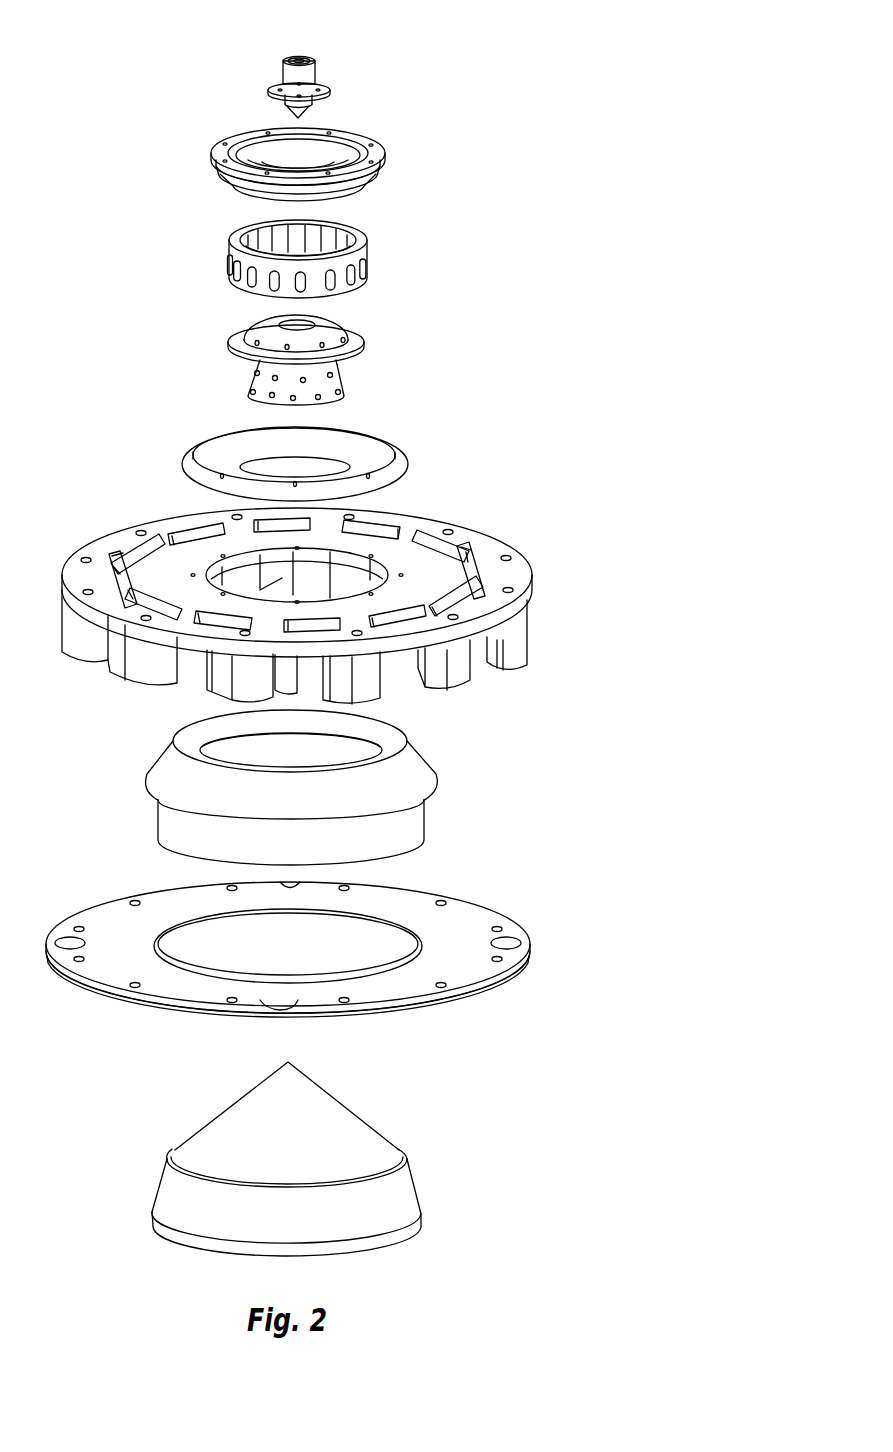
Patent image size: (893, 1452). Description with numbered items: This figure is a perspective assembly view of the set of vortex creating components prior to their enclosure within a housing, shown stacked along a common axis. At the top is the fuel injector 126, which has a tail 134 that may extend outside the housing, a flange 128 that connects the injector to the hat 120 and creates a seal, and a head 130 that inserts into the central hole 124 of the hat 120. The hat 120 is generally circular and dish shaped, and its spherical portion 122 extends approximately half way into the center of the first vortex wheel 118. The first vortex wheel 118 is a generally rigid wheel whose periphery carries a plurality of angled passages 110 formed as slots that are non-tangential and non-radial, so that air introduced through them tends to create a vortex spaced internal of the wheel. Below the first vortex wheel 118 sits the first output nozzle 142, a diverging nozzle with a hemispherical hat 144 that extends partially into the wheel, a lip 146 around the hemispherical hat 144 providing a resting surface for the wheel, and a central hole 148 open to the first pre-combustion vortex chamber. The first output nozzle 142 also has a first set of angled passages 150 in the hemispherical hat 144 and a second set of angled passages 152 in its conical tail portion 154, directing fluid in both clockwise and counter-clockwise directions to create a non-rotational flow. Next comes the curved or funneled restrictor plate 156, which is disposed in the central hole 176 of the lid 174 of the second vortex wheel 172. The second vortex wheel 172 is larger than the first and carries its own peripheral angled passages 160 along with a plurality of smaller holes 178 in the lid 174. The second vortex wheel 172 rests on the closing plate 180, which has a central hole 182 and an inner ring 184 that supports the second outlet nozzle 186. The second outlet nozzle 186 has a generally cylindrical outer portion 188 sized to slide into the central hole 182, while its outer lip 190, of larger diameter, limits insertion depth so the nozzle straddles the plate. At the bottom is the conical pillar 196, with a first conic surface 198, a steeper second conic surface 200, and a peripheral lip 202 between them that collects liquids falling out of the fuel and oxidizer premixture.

The angled passages 110 is at (368, 272).
The first vortex wheel 118 is at (353, 254).
The hat 120 is at (311, 152).
The spherical portion 122 is at (275, 196).
The central hole 124 is at (290, 160).
The fuel injector 126 is at (310, 66).
The flange 128 is at (330, 84).
The head 130 is at (322, 105).
The tail 134 is at (282, 72).
The first output nozzle 142 is at (302, 352).
The hemispherical hat 144 is at (241, 333).
The lip 146 is at (360, 336).
The central hole 148 is at (293, 323).
The first set of angled passages 150 is at (275, 357).
The second set of angled passages 152 is at (272, 398).
The conical tail portion 154 is at (309, 390).
The restrictor plate 156 is at (410, 472).
The angled passages 160 is at (490, 640).
The second vortex wheel 172 is at (327, 599).
The lid 174 is at (160, 555).
The central hole 176 is at (330, 575).
The smaller holes 178 is at (520, 562).
The closing plate 180 is at (333, 922).
The central hole 182 is at (340, 940).
The inner ring 184 is at (420, 950).
The second outlet nozzle 186 is at (301, 787).
The generally cylindrical outer portion 188 is at (155, 810).
The outer lip 190 is at (440, 777).
The conical pillar 196 is at (314, 1158).
The first conic surface 198 is at (350, 1110).
The second conic surface 200 is at (420, 1190).
The peripheral lip 202 is at (175, 1150).